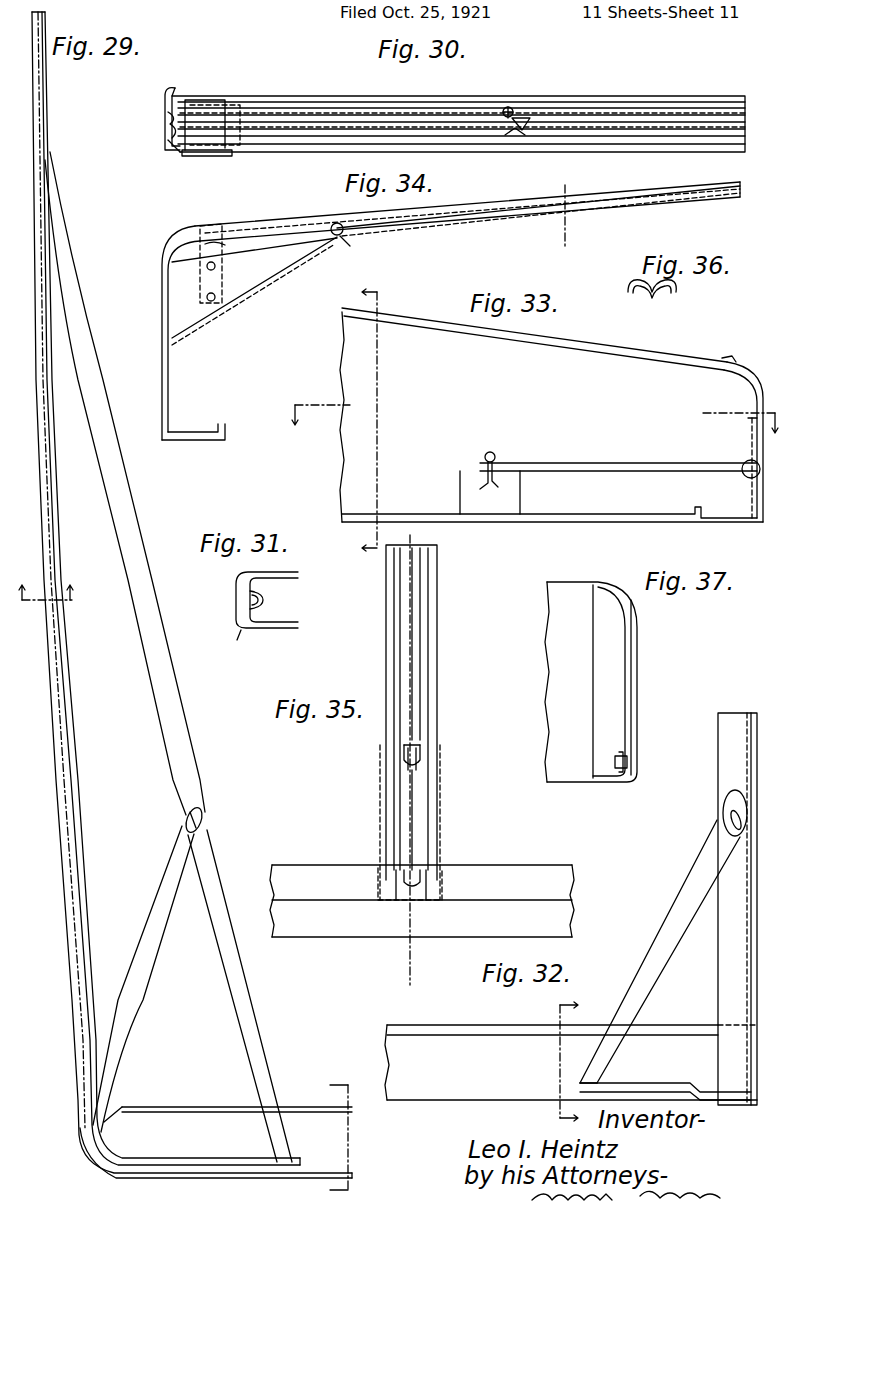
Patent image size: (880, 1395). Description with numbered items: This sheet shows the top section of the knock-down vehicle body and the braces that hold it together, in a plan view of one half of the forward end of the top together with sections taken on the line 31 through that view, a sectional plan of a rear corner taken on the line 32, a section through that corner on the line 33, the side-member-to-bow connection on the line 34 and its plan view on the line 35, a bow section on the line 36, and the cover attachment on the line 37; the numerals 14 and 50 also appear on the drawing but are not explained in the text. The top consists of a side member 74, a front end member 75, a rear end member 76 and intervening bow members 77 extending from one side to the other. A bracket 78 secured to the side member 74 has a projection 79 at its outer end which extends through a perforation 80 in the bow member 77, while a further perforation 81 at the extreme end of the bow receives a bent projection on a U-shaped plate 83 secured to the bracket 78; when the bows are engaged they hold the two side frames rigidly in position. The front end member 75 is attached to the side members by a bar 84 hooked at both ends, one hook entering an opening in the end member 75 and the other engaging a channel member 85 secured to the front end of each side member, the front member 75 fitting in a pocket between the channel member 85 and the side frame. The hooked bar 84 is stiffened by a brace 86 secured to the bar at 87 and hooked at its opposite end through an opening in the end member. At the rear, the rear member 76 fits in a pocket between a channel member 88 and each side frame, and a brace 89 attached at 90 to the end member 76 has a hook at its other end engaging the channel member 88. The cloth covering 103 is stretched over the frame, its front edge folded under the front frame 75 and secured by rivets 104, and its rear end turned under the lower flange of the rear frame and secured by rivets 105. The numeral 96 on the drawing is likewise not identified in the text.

In FIG. 33, the body frame 14 is at (752, 374).
In FIG. 29, the section line 31— 31 is at (52, 581).
In FIG. 33, the section line 32— 32 is at (536, 419).
In FIG. 32, the section line 33— 33 is at (557, 1055).
In FIG. 35, the section line 34— 34 is at (406, 756).
In FIG. 34, the section line 35— 35 is at (565, 206).
In FIG. 34, the section line 36— 36 is at (571, 249).
In FIG. 33, the section line 37— 37 is at (361, 411).
In FIG. 29, the section line 50 is at (350, 1130).
In FIG. 29, the side member 74 is at (208, 1182).
In FIG. 30, the side member 74 is at (178, 88).
In FIG. 34, the side member 74 is at (162, 306).
In FIG. 35, the side member 74 is at (320, 938).
In FIG. 32, the side member 74 is at (440, 1100).
In FIG. 29, the front end member 75 is at (42, 70).
In FIG. 30, the front end member 75 is at (290, 100).
In FIG. 31, the front end member 75 is at (241, 643).
In FIG. 33, the rear end member 76 is at (408, 330).
In FIG. 37, the rear end member 76 is at (620, 654).
In FIG. 32, the rear end member 76 is at (742, 713).
In FIG. 34, the bow member 77 is at (418, 226).
In FIG. 36, the bow member 77 is at (652, 300).
In FIG. 35, the bow member 77 is at (438, 580).
In FIG. 34, the bracket 78 is at (248, 290).
In FIG. 35, the bracket 78 is at (440, 800).
In FIG. 34, the projection 79 is at (334, 223).
In FIG. 35, the projection 79 is at (434, 754).
In FIG. 34, the perforation 80 is at (347, 243).
In FIG. 35, the perforation 80 is at (418, 748).
In FIG. 34, the perforation 81 is at (240, 227).
In FIG. 35, the perforation 81 is at (430, 850).
In FIG. 30, the U-shaped plate 83 is at (215, 120).
In FIG. 34, the U-shaped plate 83 is at (210, 226).
In FIG. 35, the U-shaped plate 83 is at (375, 886).
In FIG. 29, the bar 84 is at (48, 152).
In FIG. 30, the bar 84 is at (722, 116).
In FIG. 29, the channel member 85 is at (222, 1152).
In FIG. 30, the channel member 85 is at (172, 150).
In FIG. 30, the brace 86 is at (530, 114).
In FIG. 29, the securing point 87 is at (204, 813).
In FIG. 30, the securing point 87 is at (508, 106).
In FIG. 34, the securing point 87 is at (213, 244).
In FIG. 35, the securing point 87 is at (412, 886).
In FIG. 29, the channel member 88 is at (158, 915).
In FIG. 33, the channel member 88 is at (748, 480).
In FIG. 32, the channel member 88 is at (688, 1090).
In FIG. 33, the brace 89 is at (590, 468).
In FIG. 32, the brace 89 is at (668, 952).
In FIG. 33, the attachment point 90 is at (494, 452).
In FIG. 32, the attachment point 90 is at (724, 818).
In FIG. 29, the cross rail 96 is at (192, 1108).
In FIG. 30, the cross rail 96 is at (206, 156).
In FIG. 34, the cross rail 96 is at (188, 438).
In FIG. 33, the cross rail 96 is at (724, 536).
In FIG. 35, the cross rail 96 is at (536, 878).
In FIG. 32, the cross rail 96 is at (530, 1040).
In FIG. 31, the cloth covering 103 is at (296, 580).
In FIG. 37, the cloth covering 103 is at (568, 581).
In FIG. 31, the rivets 104 is at (263, 601).
In FIG. 37, the rivets 105 is at (614, 762).